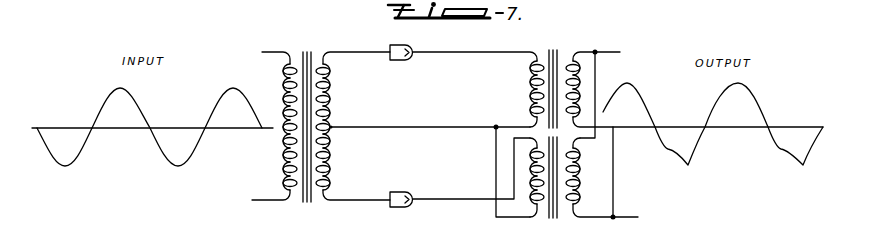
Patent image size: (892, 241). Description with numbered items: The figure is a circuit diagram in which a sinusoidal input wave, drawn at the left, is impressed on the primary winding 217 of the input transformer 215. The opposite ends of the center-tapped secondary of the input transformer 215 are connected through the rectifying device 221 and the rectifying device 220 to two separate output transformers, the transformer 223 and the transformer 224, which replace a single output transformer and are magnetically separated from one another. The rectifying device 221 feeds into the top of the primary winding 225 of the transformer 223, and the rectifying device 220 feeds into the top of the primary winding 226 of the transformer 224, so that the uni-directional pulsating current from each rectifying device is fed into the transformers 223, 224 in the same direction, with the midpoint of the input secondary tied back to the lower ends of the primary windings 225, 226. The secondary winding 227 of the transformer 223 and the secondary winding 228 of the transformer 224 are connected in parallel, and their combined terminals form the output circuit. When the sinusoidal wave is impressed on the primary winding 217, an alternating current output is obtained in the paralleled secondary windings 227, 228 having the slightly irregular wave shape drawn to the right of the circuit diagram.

The input transformer 215 is at (328, 41).
The primary winding 217 is at (282, 82).
The rectifying device 220 is at (401, 191).
The rectifying device 221 is at (396, 62).
The transformer 223 is at (576, 41).
The transformer 224 is at (578, 235).
The primary winding 225 is at (536, 80).
The primary winding 226 is at (530, 172).
The secondary winding 227 is at (571, 82).
The secondary winding 228 is at (598, 165).